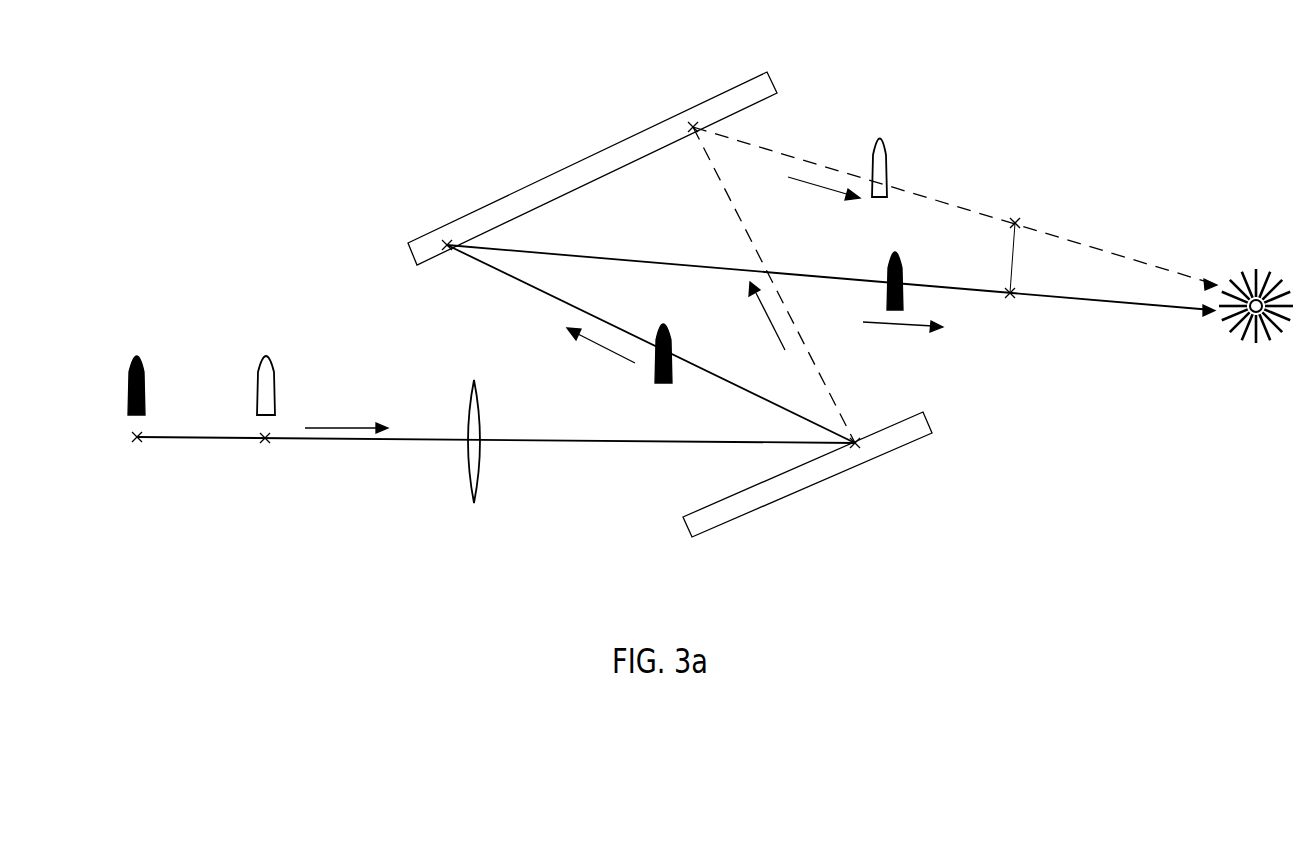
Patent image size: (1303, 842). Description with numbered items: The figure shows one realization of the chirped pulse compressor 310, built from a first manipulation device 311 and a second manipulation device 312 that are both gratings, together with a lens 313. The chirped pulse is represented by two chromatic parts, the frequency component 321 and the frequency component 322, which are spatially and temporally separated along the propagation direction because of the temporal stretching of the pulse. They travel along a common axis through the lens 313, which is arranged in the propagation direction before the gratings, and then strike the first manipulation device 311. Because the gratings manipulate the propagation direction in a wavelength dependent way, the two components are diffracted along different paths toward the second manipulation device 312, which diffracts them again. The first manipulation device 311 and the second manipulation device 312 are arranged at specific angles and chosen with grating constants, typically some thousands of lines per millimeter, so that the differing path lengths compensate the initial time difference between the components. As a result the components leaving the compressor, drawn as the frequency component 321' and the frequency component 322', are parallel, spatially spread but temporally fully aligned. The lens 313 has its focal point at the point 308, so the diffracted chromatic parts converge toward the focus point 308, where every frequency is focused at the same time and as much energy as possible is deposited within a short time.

The focal point 308 is at (1256, 296).
The chirped pulse compressor 310 is at (831, 84).
The first manipulation device 311 is at (836, 477).
The second manipulation device 312 is at (618, 146).
The lens 313 is at (466, 478).
The frequency component 321 is at (287, 359).
The frequency component 322 is at (158, 359).
The frequency component 321' is at (914, 168).
The frequency component 322' is at (929, 277).